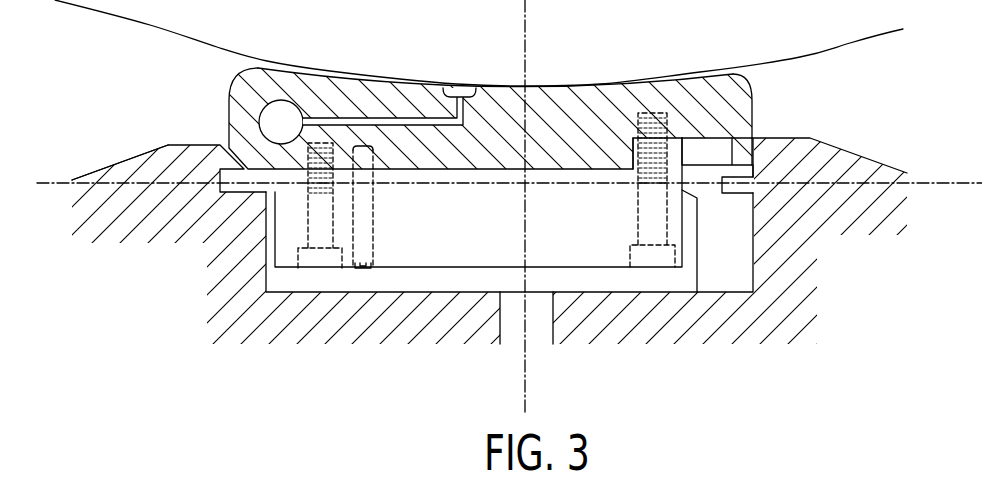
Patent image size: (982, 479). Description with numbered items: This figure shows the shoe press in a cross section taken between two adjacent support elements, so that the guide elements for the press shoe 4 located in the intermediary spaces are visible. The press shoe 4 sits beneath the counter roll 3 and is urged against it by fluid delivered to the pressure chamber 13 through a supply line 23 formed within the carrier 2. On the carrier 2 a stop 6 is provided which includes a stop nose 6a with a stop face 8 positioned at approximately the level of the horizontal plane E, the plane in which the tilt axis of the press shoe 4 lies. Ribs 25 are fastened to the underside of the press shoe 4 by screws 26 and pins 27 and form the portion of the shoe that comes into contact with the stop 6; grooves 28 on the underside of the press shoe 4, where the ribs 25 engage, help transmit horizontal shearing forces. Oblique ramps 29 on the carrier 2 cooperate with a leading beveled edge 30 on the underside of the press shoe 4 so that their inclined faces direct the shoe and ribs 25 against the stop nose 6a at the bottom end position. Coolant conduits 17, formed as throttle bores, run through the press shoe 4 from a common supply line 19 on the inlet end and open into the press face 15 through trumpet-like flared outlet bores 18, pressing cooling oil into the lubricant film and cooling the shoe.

The carrier 2 is at (773, 325).
The counter roll 3 is at (226, 25).
The press shoe 4 is at (542, 100).
The stop 6 is at (740, 208).
The stop nose 6a is at (684, 160).
The stop face 8 is at (686, 176).
The pressure chamber 13 is at (613, 280).
The press face 15 is at (595, 84).
The coolant conduits 17 is at (357, 118).
The outlet bores 18 is at (463, 92).
The supply line 19 is at (278, 116).
The supply line 23 is at (540, 316).
The ribs 25 is at (431, 248).
The screws 26 is at (320, 262).
The pins 27 is at (367, 268).
The grooves 28 is at (688, 150).
The oblique ramps 29 is at (188, 224).
The beveled edge 30 is at (228, 160).
The horizontal plane E is at (163, 186).